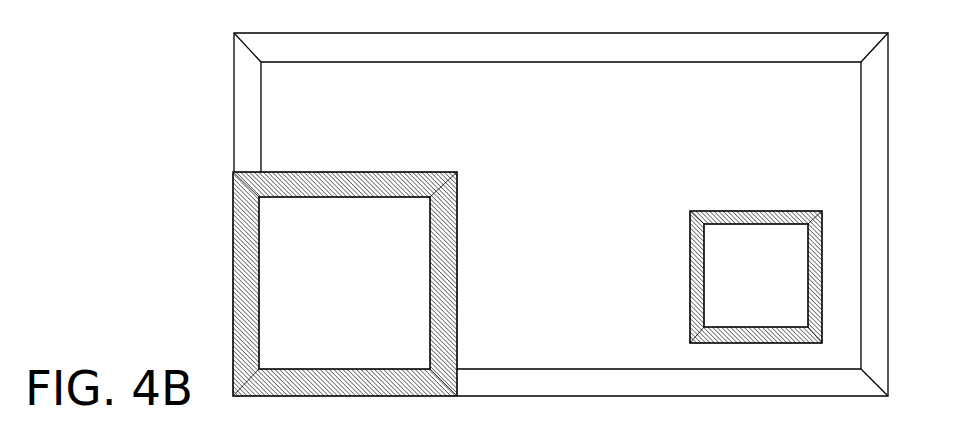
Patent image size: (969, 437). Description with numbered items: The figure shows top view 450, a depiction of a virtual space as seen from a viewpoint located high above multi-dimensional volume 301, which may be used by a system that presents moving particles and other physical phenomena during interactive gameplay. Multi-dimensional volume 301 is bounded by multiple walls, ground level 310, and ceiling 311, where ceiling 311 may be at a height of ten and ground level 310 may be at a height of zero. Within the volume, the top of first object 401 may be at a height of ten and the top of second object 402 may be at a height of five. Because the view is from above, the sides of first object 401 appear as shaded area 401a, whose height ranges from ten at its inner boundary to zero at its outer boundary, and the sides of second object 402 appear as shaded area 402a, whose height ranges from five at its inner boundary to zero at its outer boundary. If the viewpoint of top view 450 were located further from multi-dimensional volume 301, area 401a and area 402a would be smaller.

The multi-dimensional volume 301 is at (222, 60).
The ceiling 311 is at (248, 132).
The ground level 310 is at (560, 181).
The first object 401 is at (299, 284).
The area 401a is at (235, 205).
The second object 402 is at (707, 277).
The area 402a is at (690, 307).
The top view 450 is at (204, 308).